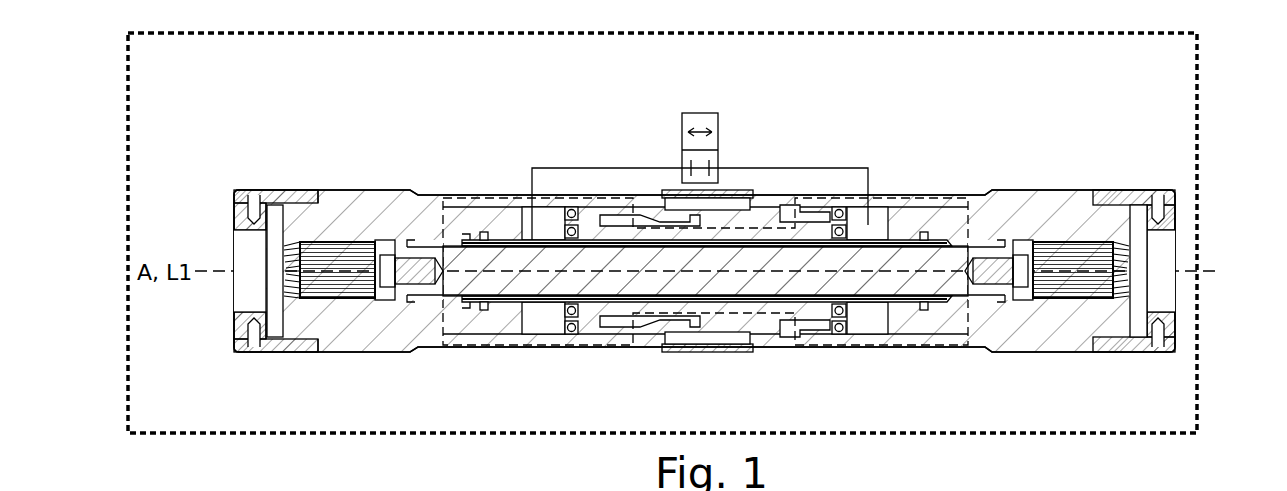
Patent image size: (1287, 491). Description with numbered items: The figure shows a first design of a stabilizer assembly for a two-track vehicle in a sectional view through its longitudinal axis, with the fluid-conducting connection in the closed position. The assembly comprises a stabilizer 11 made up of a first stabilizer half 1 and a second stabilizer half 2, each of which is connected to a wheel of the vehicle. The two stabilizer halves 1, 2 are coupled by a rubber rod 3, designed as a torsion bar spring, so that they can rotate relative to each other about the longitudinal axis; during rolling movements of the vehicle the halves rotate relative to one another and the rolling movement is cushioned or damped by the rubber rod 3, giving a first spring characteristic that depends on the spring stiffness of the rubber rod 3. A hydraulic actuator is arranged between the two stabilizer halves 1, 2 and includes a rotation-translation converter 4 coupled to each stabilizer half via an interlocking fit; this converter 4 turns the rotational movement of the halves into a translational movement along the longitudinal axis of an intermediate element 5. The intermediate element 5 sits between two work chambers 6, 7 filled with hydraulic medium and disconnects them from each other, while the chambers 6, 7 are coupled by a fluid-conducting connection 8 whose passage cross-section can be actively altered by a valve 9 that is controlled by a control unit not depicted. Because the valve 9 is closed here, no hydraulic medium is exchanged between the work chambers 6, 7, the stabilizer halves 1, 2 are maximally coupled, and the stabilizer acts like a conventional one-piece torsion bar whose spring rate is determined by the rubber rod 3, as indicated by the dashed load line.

The first stabilizer half 1 is at (286, 248).
The second stabilizer half 2 is at (1098, 246).
The rubber rod 3 is at (957, 258).
The rotation-translation converter 4 is at (482, 193).
The intermediate element 5 is at (806, 222).
The first work chamber 6 is at (875, 320).
The second work chamber 7 is at (547, 317).
The fluid-conducting connection 8 is at (586, 168).
The valve 9 is at (703, 113).
The stabilizer 11 is at (1200, 166).